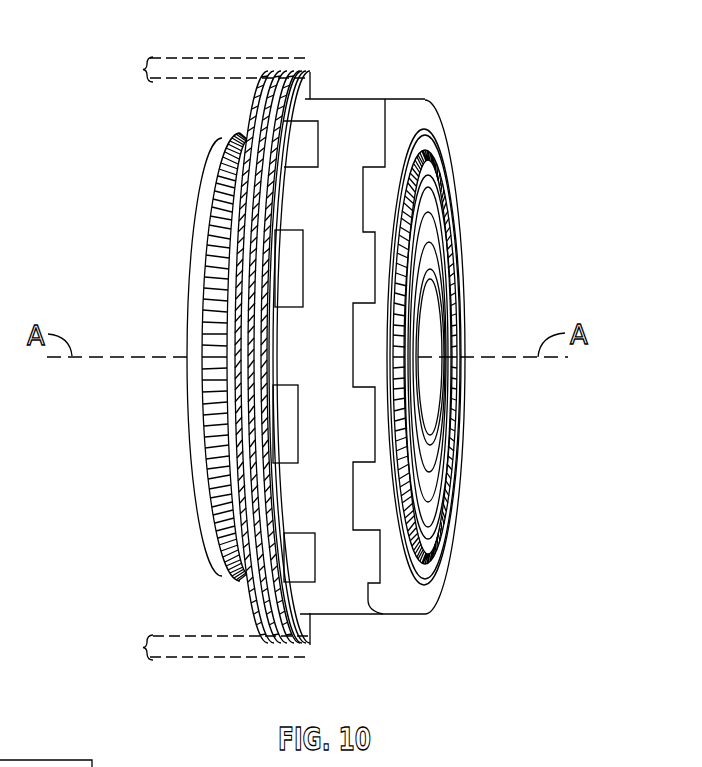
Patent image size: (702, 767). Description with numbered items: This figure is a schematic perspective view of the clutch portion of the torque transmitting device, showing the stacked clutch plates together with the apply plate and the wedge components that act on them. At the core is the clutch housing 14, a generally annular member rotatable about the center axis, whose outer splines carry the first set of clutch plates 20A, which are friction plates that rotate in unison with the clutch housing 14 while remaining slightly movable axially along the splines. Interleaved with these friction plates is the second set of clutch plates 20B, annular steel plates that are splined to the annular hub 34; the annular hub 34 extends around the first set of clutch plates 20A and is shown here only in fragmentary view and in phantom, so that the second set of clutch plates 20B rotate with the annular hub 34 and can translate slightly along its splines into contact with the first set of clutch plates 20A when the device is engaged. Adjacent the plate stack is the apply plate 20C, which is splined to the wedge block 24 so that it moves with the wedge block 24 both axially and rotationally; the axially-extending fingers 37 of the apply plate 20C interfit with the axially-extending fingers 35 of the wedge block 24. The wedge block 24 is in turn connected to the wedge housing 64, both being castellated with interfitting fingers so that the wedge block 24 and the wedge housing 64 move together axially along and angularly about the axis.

The clutch housing 14 is at (200, 215).
The first set of clutch plates 20A is at (266, 398).
The second set of clutch plates 20B is at (266, 270).
The apply plate 20C is at (310, 90).
The wedge block 24 is at (358, 120).
The annular hub 34 is at (200, 58).
The axially-extending fingers of the wedge block 35 is at (308, 102).
The axially-extending fingers of the apply plate 37 is at (307, 134).
The wedge housing 64 is at (410, 97).